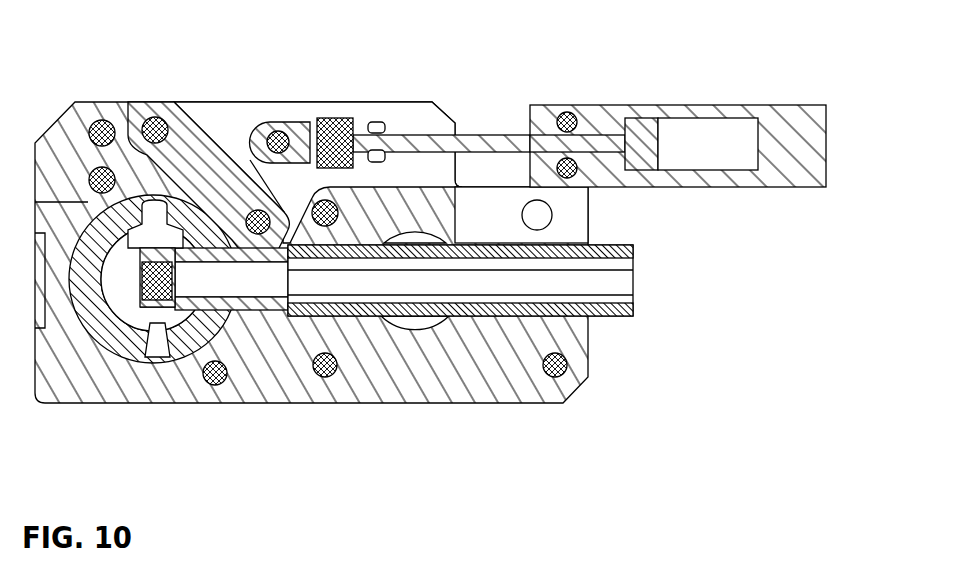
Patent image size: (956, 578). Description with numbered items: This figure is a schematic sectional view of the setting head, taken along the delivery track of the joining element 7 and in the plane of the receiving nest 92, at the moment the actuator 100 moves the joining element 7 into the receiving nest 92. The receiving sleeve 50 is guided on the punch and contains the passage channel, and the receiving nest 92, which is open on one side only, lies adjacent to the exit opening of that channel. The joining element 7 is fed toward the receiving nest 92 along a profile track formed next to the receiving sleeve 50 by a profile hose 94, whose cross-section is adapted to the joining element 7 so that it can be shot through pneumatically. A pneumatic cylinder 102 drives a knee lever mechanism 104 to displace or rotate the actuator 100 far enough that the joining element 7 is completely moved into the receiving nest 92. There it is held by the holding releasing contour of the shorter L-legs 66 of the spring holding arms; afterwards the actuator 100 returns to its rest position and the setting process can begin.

The receiving sleeve 50 is at (72, 108).
The actuator 100 is at (220, 150).
The knee lever mechanism 104 is at (307, 108).
The pneumatic cylinder 102 is at (640, 107).
The profile hose 94 is at (518, 280).
The joining element 7 is at (130, 268).
The receiving nest 92 is at (157, 290).
The shorter L-leg 66 is at (150, 310).